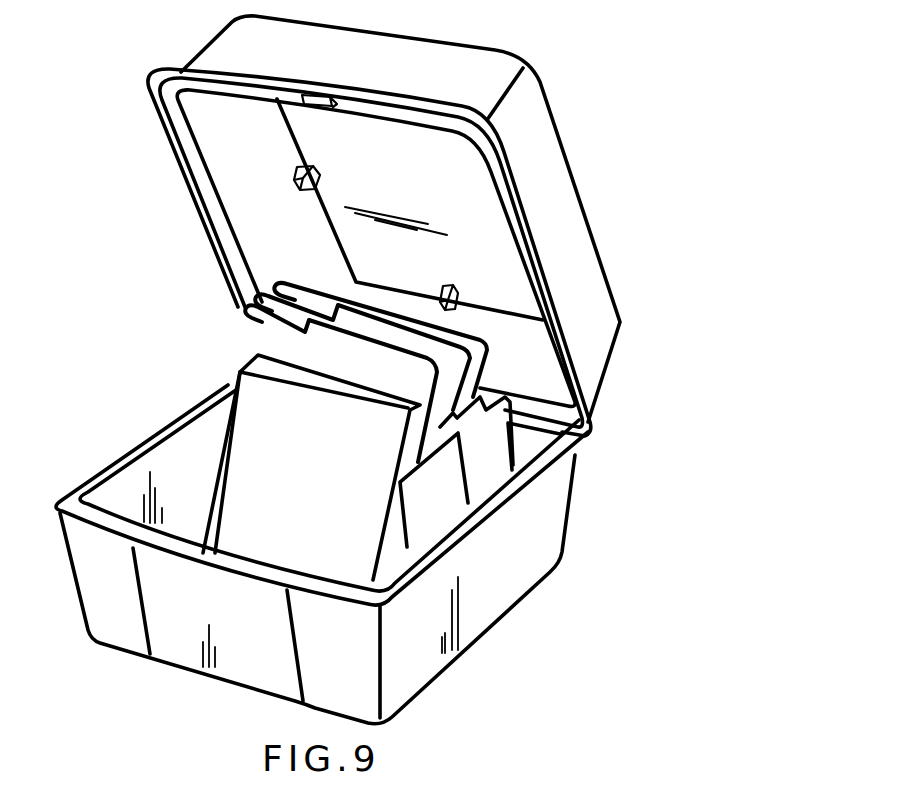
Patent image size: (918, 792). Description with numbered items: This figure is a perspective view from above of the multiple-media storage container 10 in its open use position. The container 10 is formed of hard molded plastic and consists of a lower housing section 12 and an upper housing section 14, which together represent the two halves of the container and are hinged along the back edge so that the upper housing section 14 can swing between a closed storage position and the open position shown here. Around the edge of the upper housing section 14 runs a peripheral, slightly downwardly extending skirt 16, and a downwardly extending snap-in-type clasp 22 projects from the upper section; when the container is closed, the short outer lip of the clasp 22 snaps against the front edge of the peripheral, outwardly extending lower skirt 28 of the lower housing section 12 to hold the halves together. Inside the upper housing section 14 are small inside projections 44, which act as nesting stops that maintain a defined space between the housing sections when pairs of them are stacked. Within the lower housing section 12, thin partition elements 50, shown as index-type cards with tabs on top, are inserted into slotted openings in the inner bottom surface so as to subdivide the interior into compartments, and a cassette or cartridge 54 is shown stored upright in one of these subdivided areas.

The multiple-media storage container 10 is at (85, 102).
The lower housing section 12 is at (532, 561).
The upper housing section 14 is at (594, 315).
The skirt 16 is at (523, 212).
The snap-in-type clasp 22 is at (333, 109).
The lower skirt 28 is at (547, 450).
The inside projections 44 is at (292, 181).
The partition elements 50 is at (243, 312).
The cartridges 54 is at (332, 489).